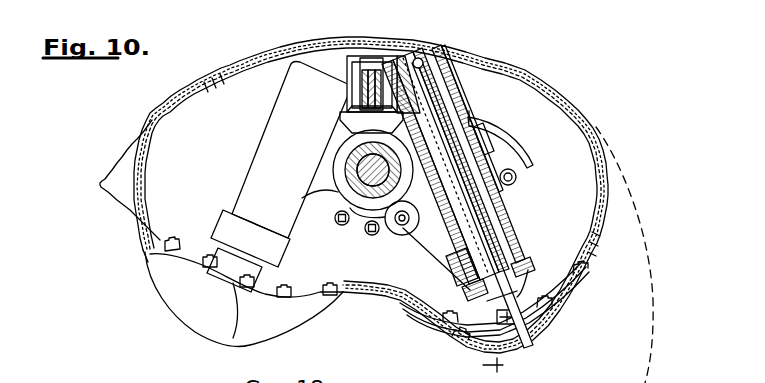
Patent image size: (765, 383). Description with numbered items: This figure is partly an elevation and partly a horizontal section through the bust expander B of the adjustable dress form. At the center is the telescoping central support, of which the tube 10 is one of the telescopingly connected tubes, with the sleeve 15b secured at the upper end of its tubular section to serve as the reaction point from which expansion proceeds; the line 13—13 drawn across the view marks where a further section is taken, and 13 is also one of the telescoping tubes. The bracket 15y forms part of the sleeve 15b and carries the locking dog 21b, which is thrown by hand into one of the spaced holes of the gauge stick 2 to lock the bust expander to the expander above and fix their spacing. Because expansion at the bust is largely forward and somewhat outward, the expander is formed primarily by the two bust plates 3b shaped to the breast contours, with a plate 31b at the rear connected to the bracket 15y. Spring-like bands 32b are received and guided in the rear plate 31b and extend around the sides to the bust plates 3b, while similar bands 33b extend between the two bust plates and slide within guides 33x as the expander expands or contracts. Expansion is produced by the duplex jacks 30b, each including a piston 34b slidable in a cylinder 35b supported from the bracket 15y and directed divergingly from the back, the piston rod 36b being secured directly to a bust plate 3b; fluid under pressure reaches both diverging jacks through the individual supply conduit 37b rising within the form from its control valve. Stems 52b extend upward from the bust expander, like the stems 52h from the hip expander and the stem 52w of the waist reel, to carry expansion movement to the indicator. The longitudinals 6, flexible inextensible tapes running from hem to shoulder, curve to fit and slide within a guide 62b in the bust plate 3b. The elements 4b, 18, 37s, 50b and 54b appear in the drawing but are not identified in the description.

The gauge stick 2 is at (360, 90).
The bust plates 3b is at (187, 307).
The guide rail 4b is at (467, 233).
The longitudinals 6 is at (135, 187).
The tube of central support 10 is at (345, 160).
The tube of central support 13 is at (502, 330).
The sleeve 15b is at (333, 170).
The bracket 15y is at (287, 100).
The shaft 18 is at (370, 172).
The locking dog 21b is at (373, 90).
The jacks 30b is at (257, 158).
The plate 31b is at (380, 45).
The spring-like bands 32b is at (607, 183).
The bands 33b is at (385, 307).
The guides 33x is at (553, 327).
The piston 34b is at (445, 80).
The cylinder 35b is at (455, 103).
The piston rod 36b is at (230, 340).
The supply conduit 37b is at (352, 106).
The stop pin 37s is at (516, 178).
The cam lobe 50b is at (395, 235).
The stems 52b is at (403, 232).
The stem 52w is at (342, 225).
The stems 52h is at (370, 235).
The link 54b is at (436, 267).
The guide 62b is at (220, 87).
The bust expander B is at (147, 263).